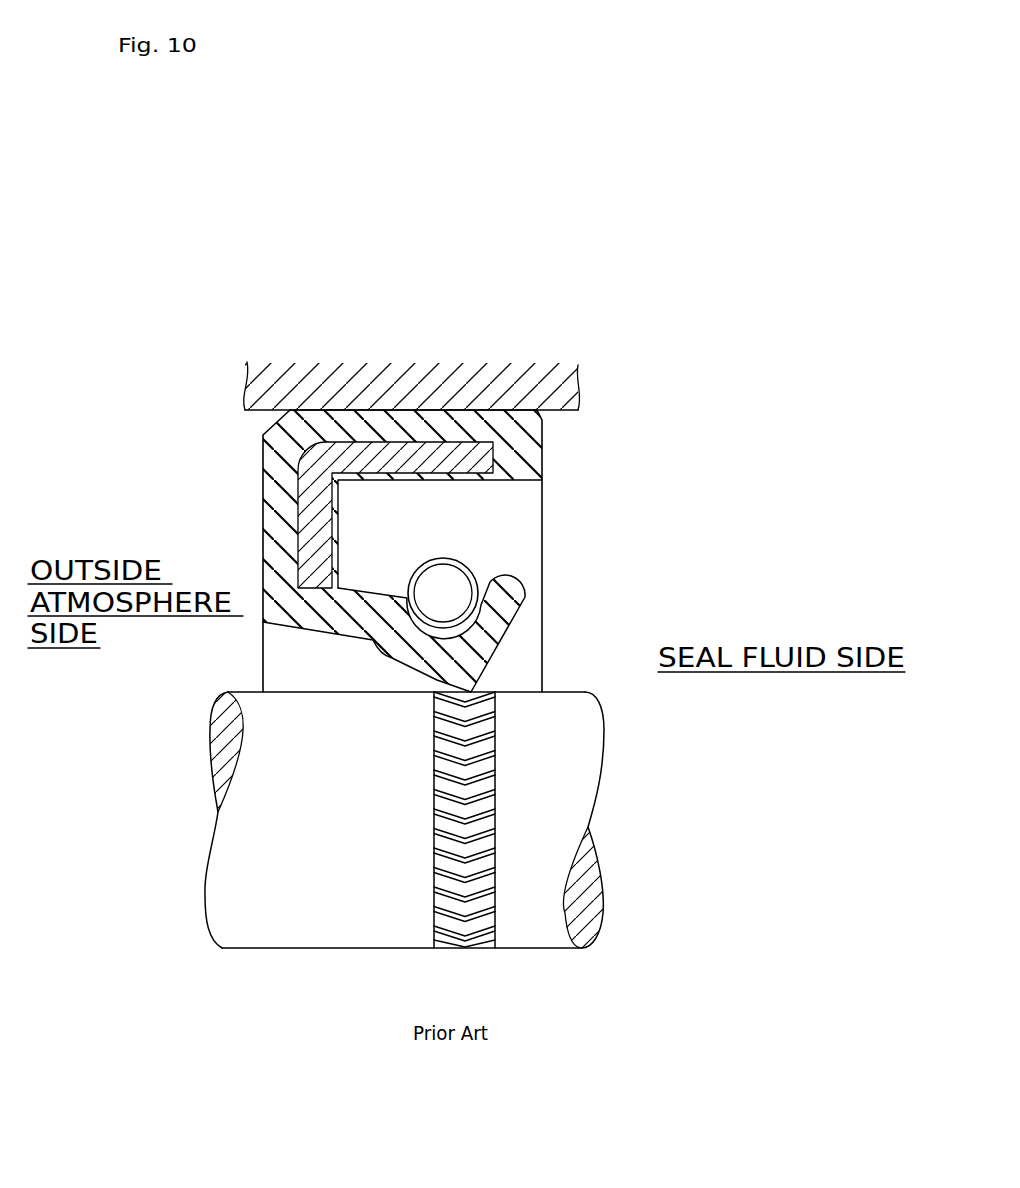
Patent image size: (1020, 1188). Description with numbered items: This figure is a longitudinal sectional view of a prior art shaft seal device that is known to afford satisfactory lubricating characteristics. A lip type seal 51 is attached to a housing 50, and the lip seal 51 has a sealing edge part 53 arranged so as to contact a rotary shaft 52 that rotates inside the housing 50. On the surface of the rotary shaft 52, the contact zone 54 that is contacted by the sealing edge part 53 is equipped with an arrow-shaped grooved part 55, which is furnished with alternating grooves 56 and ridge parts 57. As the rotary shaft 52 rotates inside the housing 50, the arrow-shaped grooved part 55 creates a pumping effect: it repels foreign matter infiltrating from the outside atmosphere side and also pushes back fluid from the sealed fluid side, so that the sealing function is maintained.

The housing 50 is at (410, 387).
The lip type seal 51 is at (340, 532).
The rotary shaft 52 is at (342, 912).
The sealing edge part 53 is at (473, 650).
The contact zone 54 is at (524, 753).
The arrow-shaped grooved part 55 is at (509, 798).
The grooves 56 is at (442, 800).
The ridge parts 57 is at (445, 783).